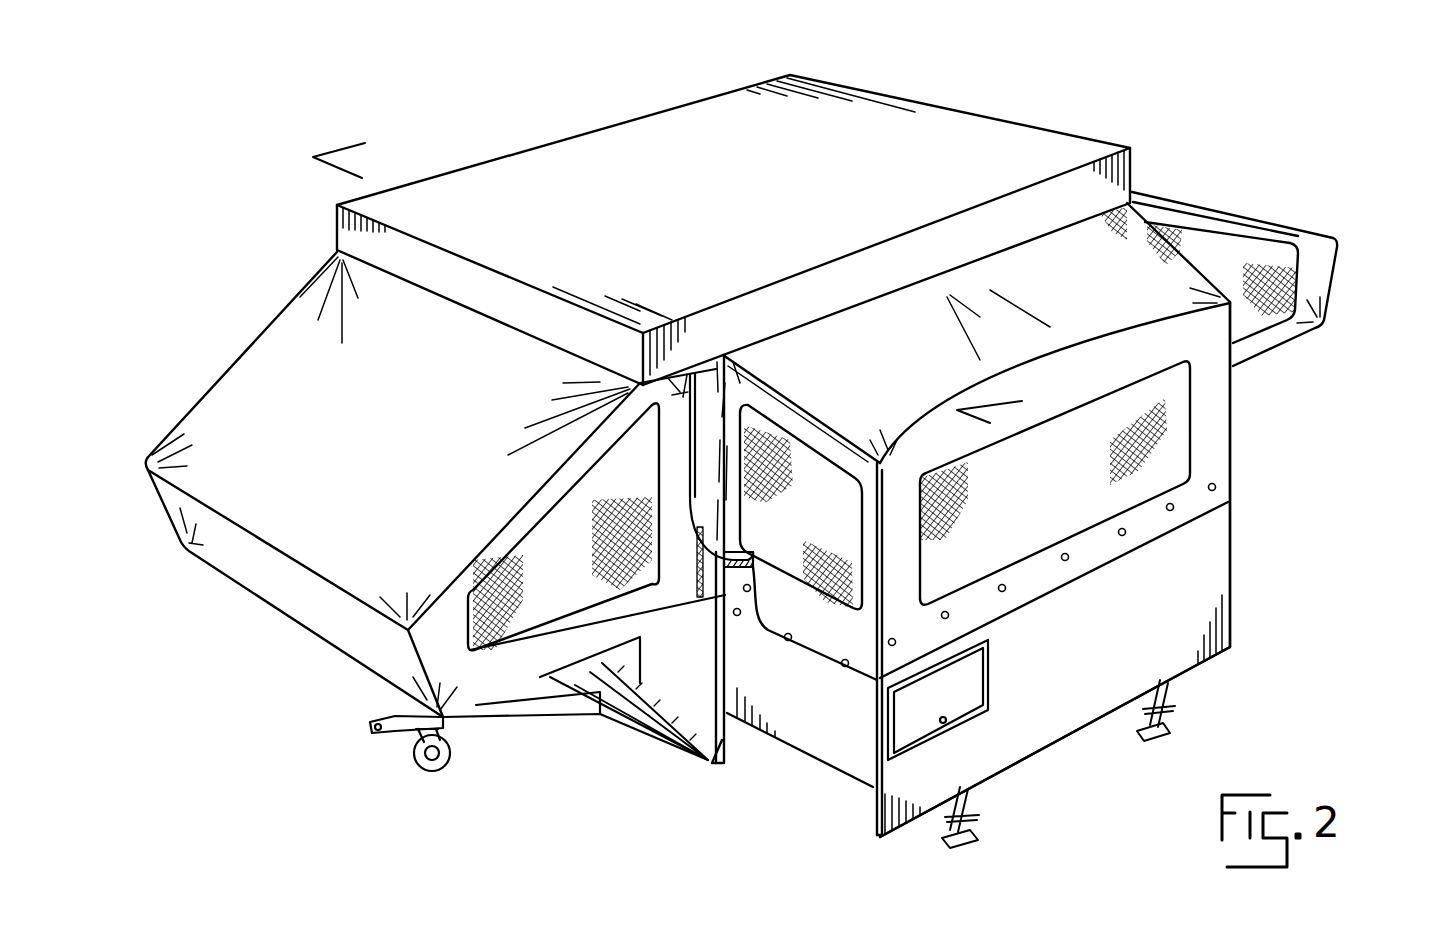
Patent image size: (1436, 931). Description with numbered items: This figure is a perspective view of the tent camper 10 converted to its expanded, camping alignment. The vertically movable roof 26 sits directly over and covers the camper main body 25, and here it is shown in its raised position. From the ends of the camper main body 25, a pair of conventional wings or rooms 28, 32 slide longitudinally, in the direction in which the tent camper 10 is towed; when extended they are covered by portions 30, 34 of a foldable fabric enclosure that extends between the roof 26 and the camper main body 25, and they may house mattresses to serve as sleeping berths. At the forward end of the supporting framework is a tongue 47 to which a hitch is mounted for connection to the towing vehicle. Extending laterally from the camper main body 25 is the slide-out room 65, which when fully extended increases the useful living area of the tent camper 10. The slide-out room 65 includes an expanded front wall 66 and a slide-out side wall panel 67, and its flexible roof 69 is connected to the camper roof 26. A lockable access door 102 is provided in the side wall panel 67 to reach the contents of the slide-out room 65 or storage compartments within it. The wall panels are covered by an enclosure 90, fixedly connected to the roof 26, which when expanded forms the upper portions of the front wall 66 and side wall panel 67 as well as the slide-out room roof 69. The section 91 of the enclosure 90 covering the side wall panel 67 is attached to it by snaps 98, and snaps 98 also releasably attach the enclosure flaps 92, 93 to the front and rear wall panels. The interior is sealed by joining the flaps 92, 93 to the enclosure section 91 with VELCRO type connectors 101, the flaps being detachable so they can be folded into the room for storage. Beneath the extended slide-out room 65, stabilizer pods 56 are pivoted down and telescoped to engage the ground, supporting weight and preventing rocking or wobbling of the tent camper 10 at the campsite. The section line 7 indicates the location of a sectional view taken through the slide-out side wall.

The tent camper 10 is at (878, 84).
The roof 26 is at (968, 143).
The section line 7 is at (683, 270).
The flexible roof 69 is at (1043, 277).
The enclosure 90 is at (864, 371).
The slide-out room 65 is at (1255, 418).
The enclosure flap 93 is at (1237, 460).
The enclosure section 91 is at (1220, 390).
The slide-out side wall panel 67 is at (1208, 553).
The snaps 98 is at (1122, 532).
The lockable access door 102 is at (960, 687).
The stabilizer pods 56 is at (977, 807).
The enclosure flap 92 is at (825, 637).
The front wall 66 is at (852, 748).
The VELCRO type connectors 101 is at (697, 582).
The camper main body 25 is at (683, 758).
The tongue 47 is at (528, 710).
The enclosure portion 34 is at (228, 416).
The room 32 is at (298, 632).
The room 28 is at (1350, 255).
The enclosure portion 30 is at (1222, 210).